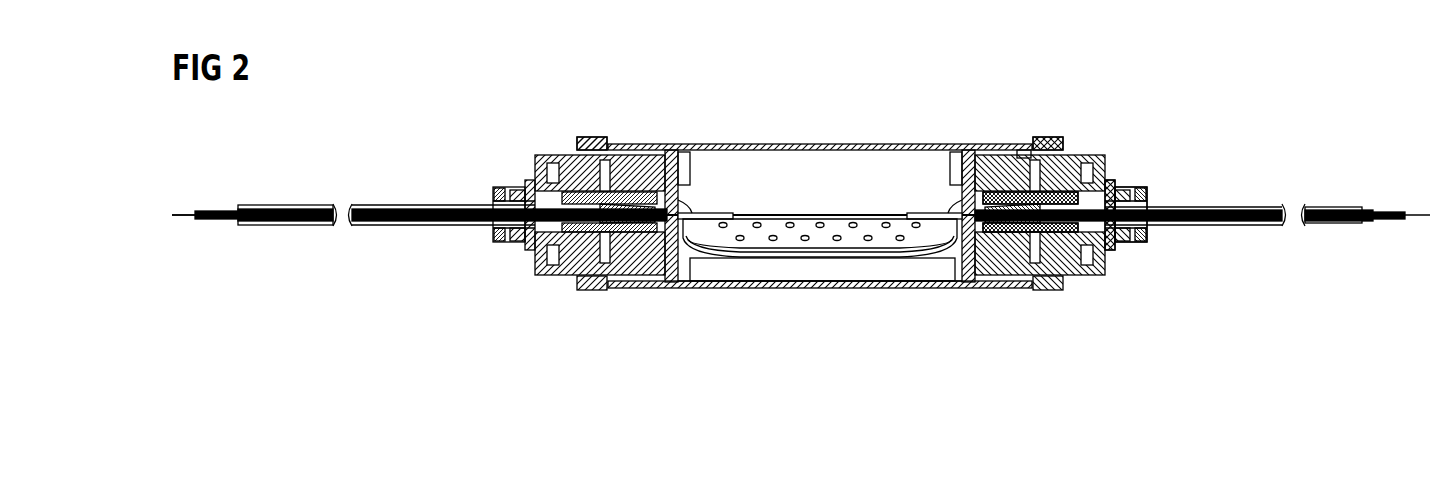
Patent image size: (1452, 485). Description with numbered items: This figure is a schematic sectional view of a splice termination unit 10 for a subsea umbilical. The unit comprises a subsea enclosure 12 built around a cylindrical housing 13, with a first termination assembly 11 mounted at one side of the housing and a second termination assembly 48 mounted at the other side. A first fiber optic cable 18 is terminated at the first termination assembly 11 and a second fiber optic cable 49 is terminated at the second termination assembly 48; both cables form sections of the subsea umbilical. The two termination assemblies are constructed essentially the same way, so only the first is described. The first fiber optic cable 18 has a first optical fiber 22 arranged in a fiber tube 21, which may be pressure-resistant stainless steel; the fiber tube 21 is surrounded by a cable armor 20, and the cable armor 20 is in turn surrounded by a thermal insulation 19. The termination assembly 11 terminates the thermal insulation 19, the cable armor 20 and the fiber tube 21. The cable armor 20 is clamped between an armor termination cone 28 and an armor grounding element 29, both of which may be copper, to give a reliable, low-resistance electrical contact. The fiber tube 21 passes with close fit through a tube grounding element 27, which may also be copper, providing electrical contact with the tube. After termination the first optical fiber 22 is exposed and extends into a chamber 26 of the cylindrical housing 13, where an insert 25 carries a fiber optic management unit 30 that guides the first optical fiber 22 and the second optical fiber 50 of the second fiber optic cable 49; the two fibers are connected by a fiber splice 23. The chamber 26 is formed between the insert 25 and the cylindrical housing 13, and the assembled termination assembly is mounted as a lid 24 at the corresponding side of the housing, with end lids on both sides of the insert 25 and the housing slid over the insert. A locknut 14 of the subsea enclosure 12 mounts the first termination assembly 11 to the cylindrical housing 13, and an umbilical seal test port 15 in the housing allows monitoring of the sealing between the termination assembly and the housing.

The splice termination unit 10 is at (947, 109).
The first termination assembly 11 is at (1065, 152).
The subsea enclosure 12 is at (694, 112).
The cylindrical housing 13 is at (642, 148).
The locknut 14 is at (1046, 137).
The umbilical seal test port 15 is at (1020, 148).
The first fiber optic cable 18 is at (1220, 240).
The thermal insulation 19 is at (1318, 206).
The cable armor 20 is at (1372, 207).
The fiber tube 21 is at (1383, 222).
The first optical fiber 22 is at (1420, 221).
The fiber splice 23 is at (812, 256).
The lid 24 is at (1108, 262).
The insert 25 is at (710, 272).
The chamber 26 is at (758, 242).
The tube grounding element 27 is at (995, 283).
The armor termination cone 28 is at (1030, 265).
The armor grounding element 29 is at (1073, 265).
The fiber optic management unit 30 is at (865, 246).
The second termination assembly 48 is at (575, 147).
The second fiber optic cable 49 is at (410, 186).
The second optical fiber 50 is at (185, 226).